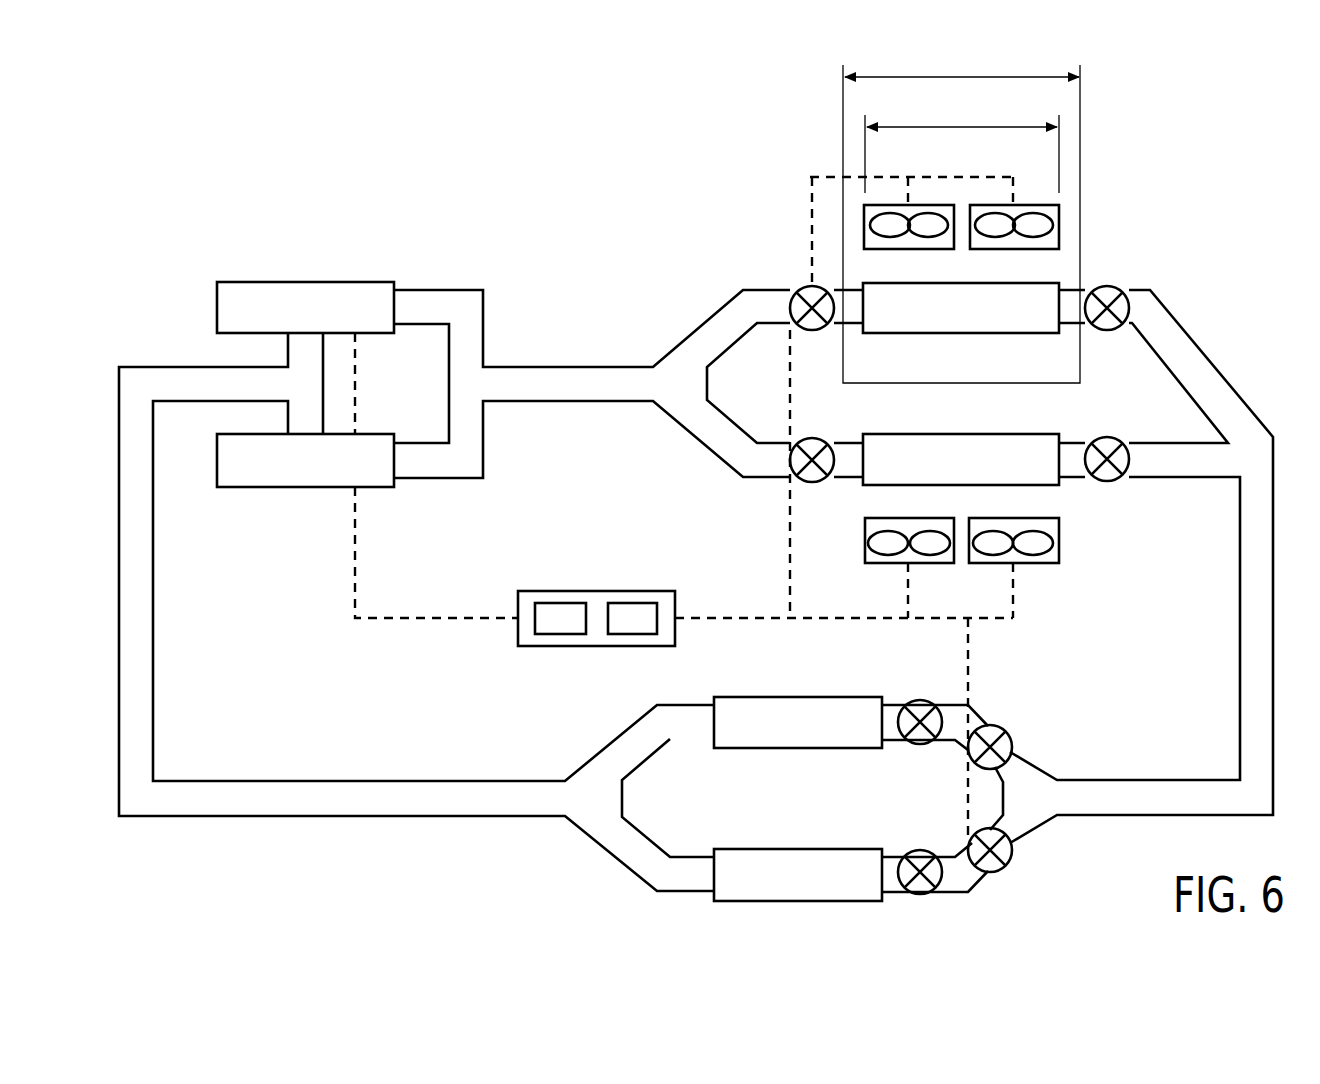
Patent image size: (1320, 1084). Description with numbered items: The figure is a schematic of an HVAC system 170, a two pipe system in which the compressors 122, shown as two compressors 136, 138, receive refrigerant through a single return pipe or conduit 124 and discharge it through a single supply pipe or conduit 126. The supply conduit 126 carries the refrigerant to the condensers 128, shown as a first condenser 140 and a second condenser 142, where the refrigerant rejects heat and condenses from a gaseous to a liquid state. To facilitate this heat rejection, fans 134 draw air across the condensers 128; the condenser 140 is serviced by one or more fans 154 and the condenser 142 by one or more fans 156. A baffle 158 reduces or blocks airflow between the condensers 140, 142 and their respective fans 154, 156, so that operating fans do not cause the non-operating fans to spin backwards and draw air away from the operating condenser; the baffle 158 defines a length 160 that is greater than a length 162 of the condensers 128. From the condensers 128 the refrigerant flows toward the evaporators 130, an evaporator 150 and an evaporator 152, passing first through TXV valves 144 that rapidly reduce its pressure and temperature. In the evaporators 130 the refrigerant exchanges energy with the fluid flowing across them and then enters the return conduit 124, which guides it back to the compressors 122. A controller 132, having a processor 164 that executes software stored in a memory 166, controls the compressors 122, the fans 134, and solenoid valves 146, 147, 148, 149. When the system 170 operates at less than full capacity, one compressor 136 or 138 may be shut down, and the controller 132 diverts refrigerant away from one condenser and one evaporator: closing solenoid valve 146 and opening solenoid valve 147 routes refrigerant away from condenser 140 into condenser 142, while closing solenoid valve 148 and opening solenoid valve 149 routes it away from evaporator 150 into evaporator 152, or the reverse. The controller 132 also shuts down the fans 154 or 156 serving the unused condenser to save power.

The compressors 122 is at (315, 183).
The return pipe or conduit 124 is at (155, 592).
The supply pipe or conduit 126 is at (565, 367).
The condensers 128 is at (1229, 298).
The evaporators 130 is at (826, 666).
The controller 132 is at (597, 591).
The fans 134 is at (1133, 150).
The compressor 136 is at (305, 282).
The compressor 138 is at (305, 487).
The first condenser 140 is at (960, 333).
The second condenser 142 is at (960, 485).
The TXV valves 144 is at (918, 746).
The solenoid valve 146 is at (800, 290).
The solenoid valve 147 is at (806, 482).
The solenoid valve 148 is at (997, 870).
The solenoid valve 149 is at (996, 728).
The evaporator 150 is at (796, 901).
The evaporator 152 is at (797, 697).
The fans 154 is at (955, 168).
The fans 156 is at (842, 543).
The baffle 158 is at (960, 383).
The length 160 is at (960, 78).
The length 162 is at (960, 128).
The processor 164 is at (562, 646).
The memory 166 is at (632, 646).
The HVAC system 170 is at (587, 208).